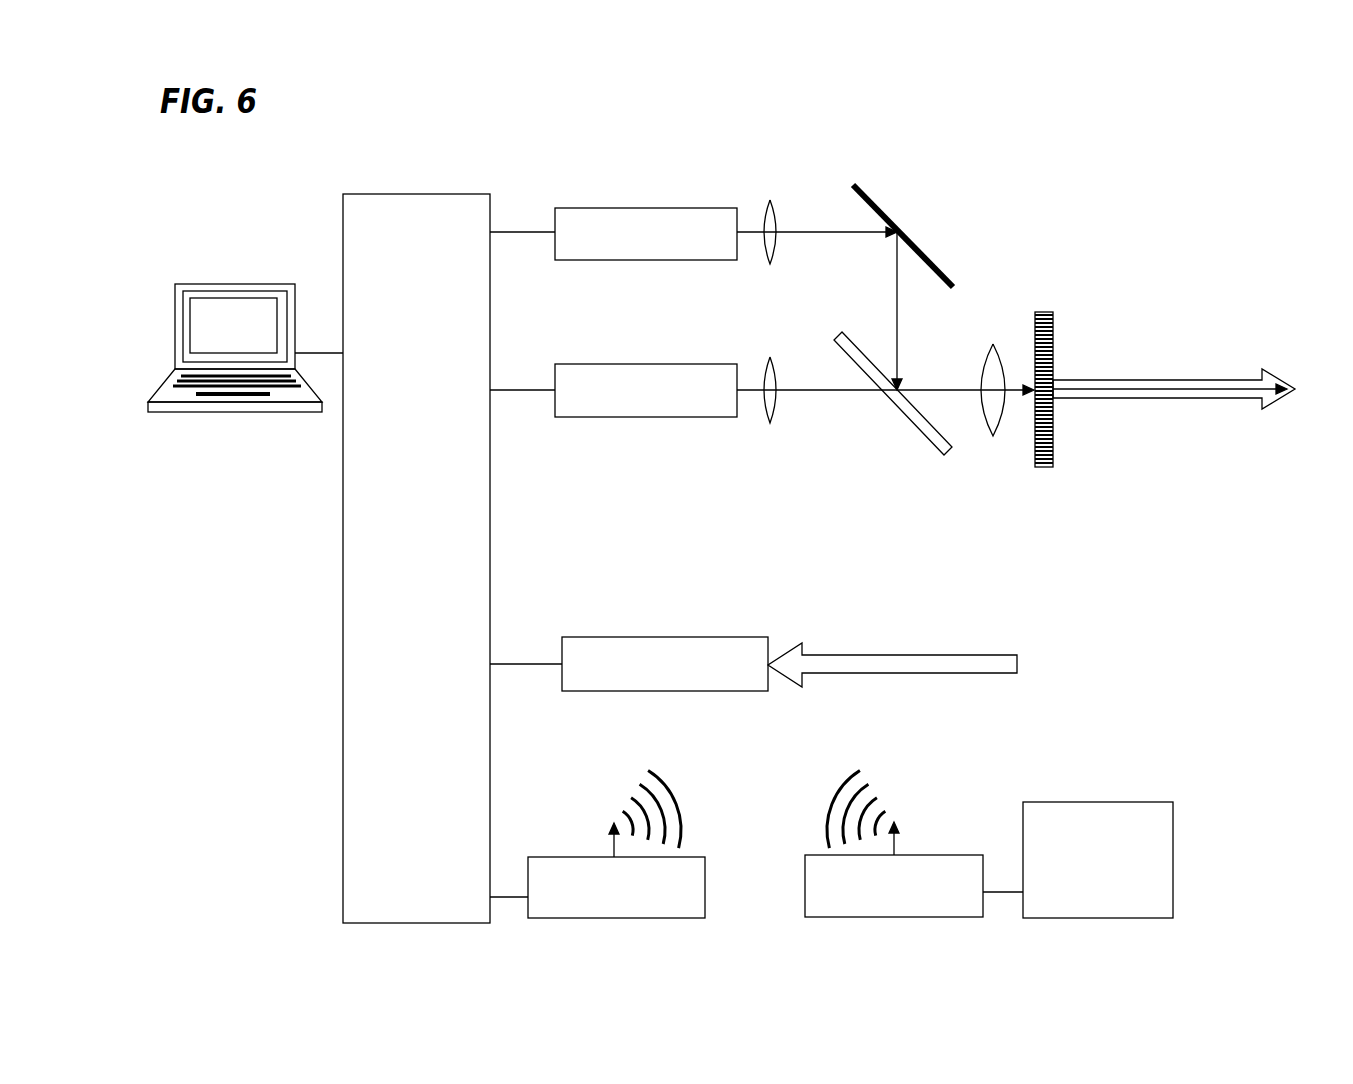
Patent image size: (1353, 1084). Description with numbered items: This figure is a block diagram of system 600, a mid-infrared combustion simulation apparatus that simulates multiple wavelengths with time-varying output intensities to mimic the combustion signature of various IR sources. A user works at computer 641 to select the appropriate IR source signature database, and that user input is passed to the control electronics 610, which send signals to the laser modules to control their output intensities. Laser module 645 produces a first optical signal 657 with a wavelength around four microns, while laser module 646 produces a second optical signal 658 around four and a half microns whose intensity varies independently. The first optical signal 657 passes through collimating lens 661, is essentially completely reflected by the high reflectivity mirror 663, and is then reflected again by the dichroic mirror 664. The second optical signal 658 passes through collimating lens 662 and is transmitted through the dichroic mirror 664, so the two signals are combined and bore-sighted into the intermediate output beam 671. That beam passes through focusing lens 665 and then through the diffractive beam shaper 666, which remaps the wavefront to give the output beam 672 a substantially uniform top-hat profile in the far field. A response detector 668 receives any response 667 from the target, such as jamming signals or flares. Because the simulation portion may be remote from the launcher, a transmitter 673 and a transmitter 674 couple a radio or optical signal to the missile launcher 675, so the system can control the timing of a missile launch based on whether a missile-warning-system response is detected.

The system 600 is at (250, 225).
The control electronics 610 is at (491, 538).
The computer 641 is at (250, 412).
The laser module 645 is at (657, 208).
The laser module 646 is at (600, 418).
The first optical signal 657 is at (812, 232).
The second optical signal 658 is at (843, 390).
The collimating lens 661 is at (776, 201).
The collimating lens 662 is at (777, 422).
The high reflectivity mirror 663 is at (860, 185).
The dichroic mirror 664 is at (912, 421).
The focusing lens 665 is at (997, 437).
The diffractive beam shaper 666 is at (1046, 468).
The response 667 is at (917, 668).
The response detector 668 is at (613, 692).
The intermediate output beam 671 is at (980, 391).
The output beam 672 is at (1225, 386).
The transmitter 673 is at (590, 862).
The transmitter 674 is at (915, 855).
The missile launcher 675 is at (1080, 802).